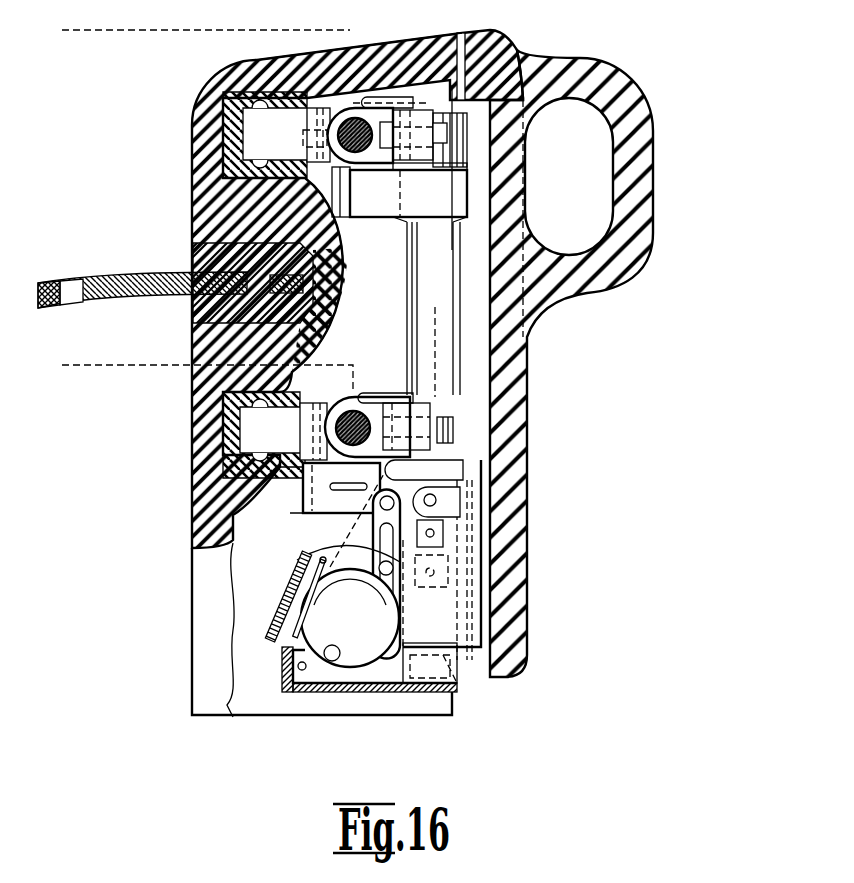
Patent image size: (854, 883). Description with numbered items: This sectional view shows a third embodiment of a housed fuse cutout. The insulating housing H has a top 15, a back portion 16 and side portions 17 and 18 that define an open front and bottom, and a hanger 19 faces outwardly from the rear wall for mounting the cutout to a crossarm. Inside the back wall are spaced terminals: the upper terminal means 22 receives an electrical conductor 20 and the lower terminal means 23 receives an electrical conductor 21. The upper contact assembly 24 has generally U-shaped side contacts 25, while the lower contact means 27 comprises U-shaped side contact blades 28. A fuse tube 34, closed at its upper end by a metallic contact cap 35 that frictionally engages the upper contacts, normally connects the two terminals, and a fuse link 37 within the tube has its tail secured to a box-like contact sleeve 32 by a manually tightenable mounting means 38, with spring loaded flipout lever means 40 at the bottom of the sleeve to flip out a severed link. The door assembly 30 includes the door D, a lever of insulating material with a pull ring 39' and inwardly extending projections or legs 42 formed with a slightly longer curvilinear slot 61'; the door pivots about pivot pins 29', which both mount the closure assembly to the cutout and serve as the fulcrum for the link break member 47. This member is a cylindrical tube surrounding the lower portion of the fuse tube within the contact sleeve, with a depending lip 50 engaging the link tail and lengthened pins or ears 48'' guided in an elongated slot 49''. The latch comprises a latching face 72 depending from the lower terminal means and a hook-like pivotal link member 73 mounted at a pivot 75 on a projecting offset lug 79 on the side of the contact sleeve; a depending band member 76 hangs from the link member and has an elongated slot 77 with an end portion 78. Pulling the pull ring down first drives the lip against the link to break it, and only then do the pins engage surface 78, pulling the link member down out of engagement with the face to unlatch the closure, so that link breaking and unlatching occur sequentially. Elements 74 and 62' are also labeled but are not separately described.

The insulating housing H is at (190, 192).
The door D is at (528, 368).
The top 15 is at (388, 55).
The back portion 16 is at (200, 422).
The side portion 17 is at (220, 677).
The side portion 18 is at (245, 623).
The hanger 19 is at (150, 292).
The electrical conductor 20 is at (147, 31).
The electrical conductor 21 is at (115, 367).
The upper terminal means 22 is at (340, 105).
The lower terminal means 23 is at (366, 395).
The upper contact assembly 24 is at (370, 220).
The side contacts 25 is at (388, 208).
The lower contact means 27 is at (300, 503).
The side contact blades 28 is at (340, 502).
The pivot pins 29' is at (338, 680).
The door assembly 30 is at (530, 557).
The contact sleeve 32 is at (333, 540).
The fuse tube 34 is at (418, 282).
The metallic contact cap 35 is at (452, 117).
The fuse link 37 is at (285, 690).
The mounting means 38 is at (275, 598).
The pull ring 39' is at (679, 190).
The flipout lever means 40 is at (297, 688).
The inwardly extending projections 42 is at (315, 640).
The link break member 47 is at (455, 680).
The pins or ears 48'' is at (412, 586).
The elongated slot 49'' is at (371, 573).
The depending lip 50 is at (388, 688).
The curvilinear slot 61' is at (339, 555).
The cam arc 62' is at (350, 589).
The latching face 72 is at (405, 470).
The pivotal link member 73 is at (367, 470).
The link 74 is at (440, 530).
The pivot 75 is at (437, 503).
The depending band member 76 is at (402, 618).
The elongated slot 77 is at (380, 618).
The end portion 78 is at (394, 643).
The projecting offset lug 79 is at (437, 540).